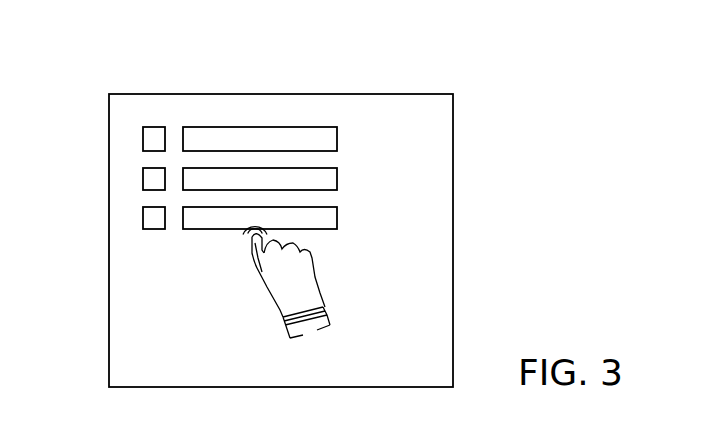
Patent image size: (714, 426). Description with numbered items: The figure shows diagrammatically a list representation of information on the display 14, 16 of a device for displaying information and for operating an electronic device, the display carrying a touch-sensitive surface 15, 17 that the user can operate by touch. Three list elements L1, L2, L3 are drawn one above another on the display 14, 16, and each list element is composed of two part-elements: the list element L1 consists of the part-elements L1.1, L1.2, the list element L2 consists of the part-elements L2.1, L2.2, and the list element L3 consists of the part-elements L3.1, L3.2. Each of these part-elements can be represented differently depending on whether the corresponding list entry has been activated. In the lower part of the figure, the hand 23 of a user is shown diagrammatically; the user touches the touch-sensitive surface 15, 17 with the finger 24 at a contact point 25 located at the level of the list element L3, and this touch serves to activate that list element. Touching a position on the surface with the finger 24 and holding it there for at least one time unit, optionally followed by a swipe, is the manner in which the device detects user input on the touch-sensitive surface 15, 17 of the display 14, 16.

The display 14 is at (489, 71).
The display 16 is at (295, 217).
The touch-sensitive surface 15 is at (387, 117).
The touch-sensitive surface 17 is at (281, 240).
The list element L1 is at (474, 132).
The list element L2 is at (474, 175).
The list element L3 is at (474, 213).
The part-element L1.1 is at (150, 142).
The part-element L1.2 is at (330, 142).
The part-element L2.1 is at (150, 181).
The part-element L2.2 is at (330, 180).
The part-element L3.1 is at (150, 220).
The part-element L3.2 is at (330, 219).
The hand 23 is at (288, 281).
The finger 24 is at (255, 234).
The contact point 25 is at (230, 234).